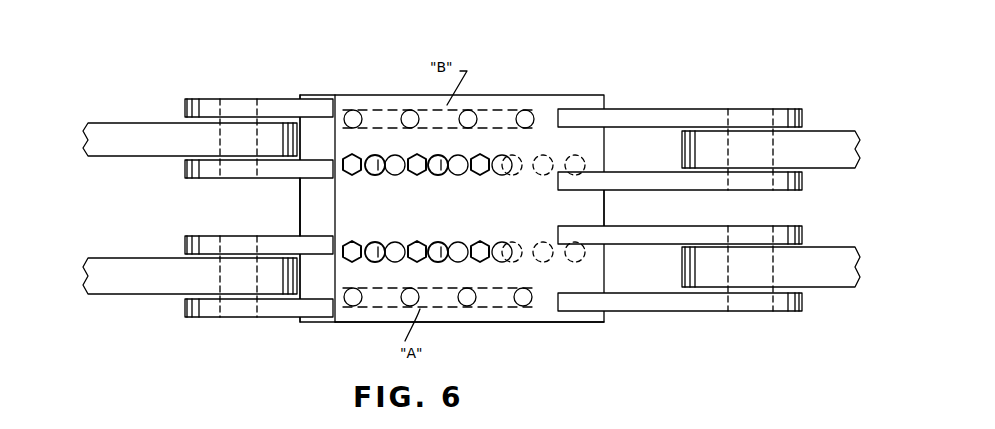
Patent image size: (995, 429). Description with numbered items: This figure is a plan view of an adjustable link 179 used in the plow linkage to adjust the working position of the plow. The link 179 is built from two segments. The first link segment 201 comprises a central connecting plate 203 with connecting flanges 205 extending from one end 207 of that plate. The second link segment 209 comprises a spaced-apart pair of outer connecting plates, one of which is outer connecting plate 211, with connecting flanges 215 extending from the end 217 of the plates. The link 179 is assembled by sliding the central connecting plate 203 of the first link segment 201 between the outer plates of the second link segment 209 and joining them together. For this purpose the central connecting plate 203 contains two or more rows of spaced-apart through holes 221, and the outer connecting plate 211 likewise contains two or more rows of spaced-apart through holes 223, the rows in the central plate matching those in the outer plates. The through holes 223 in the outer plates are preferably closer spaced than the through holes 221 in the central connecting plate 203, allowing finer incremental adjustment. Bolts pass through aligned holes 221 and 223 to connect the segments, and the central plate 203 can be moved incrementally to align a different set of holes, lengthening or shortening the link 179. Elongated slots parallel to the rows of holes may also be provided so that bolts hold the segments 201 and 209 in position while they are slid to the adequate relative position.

The link 179 is at (502, 78).
The first link segment 201 is at (270, 97).
The central connecting plate 203 is at (320, 277).
The connecting flanges 205 is at (192, 178).
The end of plate 207 is at (300, 207).
The second link segment 209 is at (648, 104).
The outer connecting plate 211 is at (548, 307).
The connecting flanges 215 is at (648, 172).
The end of outer plate 217 is at (604, 214).
The through holes 221 is at (448, 243).
The through holes 223 is at (462, 154).